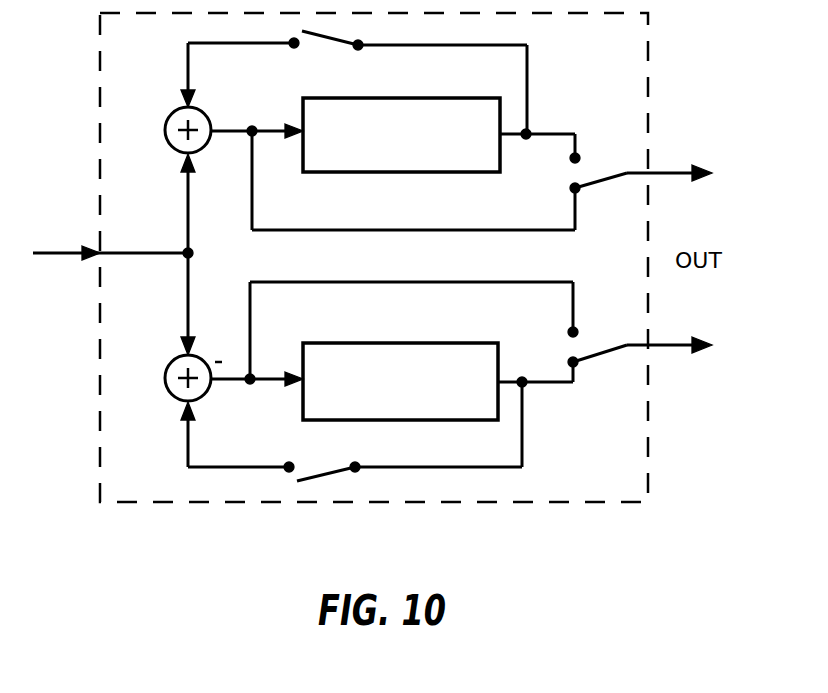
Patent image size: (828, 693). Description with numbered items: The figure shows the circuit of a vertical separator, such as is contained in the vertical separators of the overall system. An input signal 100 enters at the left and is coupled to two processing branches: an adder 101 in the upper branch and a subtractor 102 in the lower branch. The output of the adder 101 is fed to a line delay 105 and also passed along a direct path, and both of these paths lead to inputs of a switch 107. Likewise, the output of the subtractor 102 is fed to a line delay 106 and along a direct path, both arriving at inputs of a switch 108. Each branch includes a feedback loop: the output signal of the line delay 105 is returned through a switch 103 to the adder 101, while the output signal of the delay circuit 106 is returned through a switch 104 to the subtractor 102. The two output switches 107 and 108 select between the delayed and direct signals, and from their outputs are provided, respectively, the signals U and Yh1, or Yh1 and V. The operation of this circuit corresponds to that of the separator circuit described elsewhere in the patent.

The input signal 100 is at (58, 255).
The adder 101 is at (166, 130).
The subtractor 102 is at (166, 372).
The switch 103 is at (346, 84).
The switch 104 is at (343, 455).
The line delay 105 is at (428, 98).
The line delay 106 is at (363, 343).
The switch 107 is at (630, 227).
The switch 108 is at (630, 334).